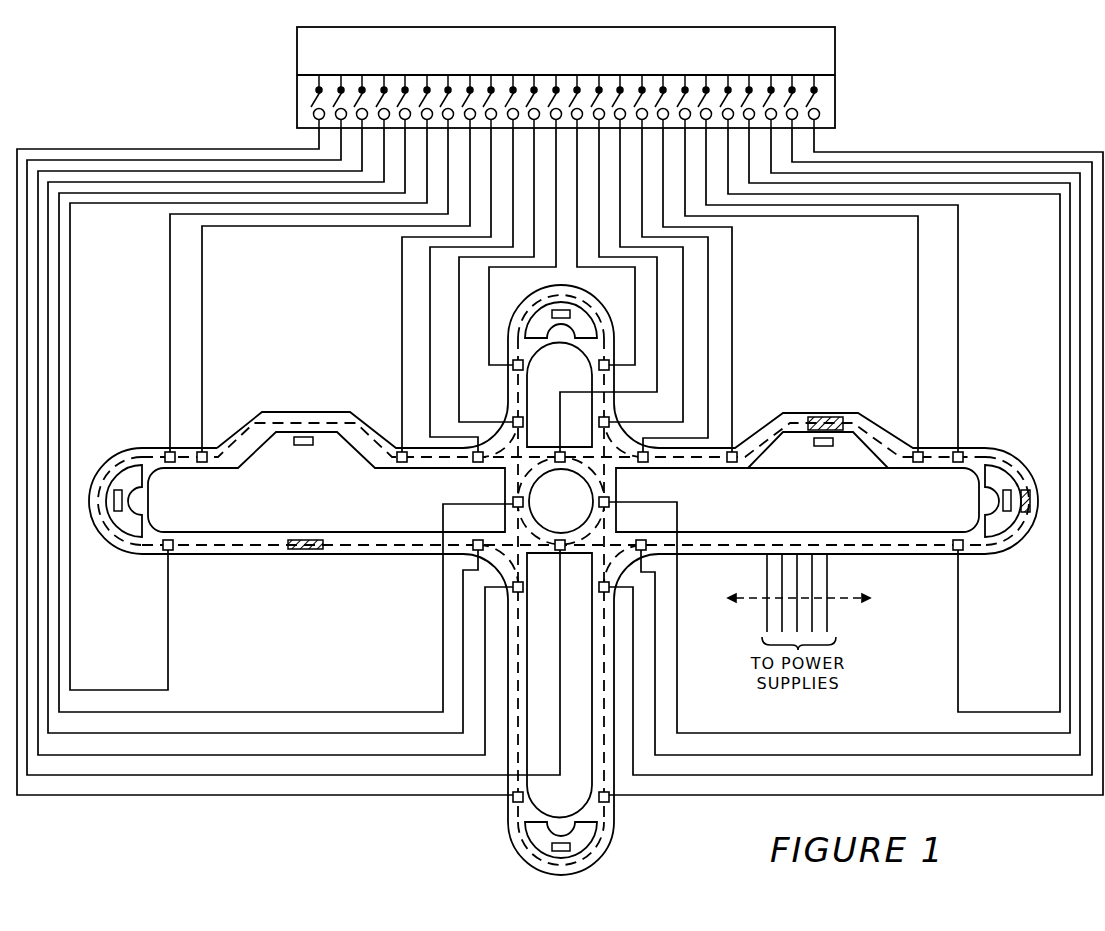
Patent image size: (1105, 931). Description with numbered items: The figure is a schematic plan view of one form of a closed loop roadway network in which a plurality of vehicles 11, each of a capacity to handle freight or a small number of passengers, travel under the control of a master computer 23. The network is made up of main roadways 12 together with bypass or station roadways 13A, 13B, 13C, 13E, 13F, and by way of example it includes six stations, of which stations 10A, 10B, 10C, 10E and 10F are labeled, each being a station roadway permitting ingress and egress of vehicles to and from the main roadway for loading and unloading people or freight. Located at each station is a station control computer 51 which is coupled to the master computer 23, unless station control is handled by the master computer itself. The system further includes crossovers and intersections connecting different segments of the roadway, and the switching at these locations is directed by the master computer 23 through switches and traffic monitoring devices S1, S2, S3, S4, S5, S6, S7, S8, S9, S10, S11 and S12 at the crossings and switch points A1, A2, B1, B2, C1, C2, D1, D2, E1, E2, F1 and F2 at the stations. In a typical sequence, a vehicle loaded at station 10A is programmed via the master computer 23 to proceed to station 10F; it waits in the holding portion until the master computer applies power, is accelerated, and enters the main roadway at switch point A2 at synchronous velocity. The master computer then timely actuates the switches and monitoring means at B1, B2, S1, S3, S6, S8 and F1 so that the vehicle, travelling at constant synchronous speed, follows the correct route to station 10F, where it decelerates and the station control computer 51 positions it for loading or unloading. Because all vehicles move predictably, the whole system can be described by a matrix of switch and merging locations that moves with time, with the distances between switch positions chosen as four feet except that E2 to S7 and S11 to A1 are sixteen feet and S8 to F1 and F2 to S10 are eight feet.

The master computer 23 is at (836, 47).
The station 10A is at (1032, 460).
The station 10B is at (775, 412).
The station 10C is at (522, 296).
The station 10E is at (106, 455).
The station 10F is at (500, 853).
The bypass or station roadway 13A is at (1025, 552).
The bypass or station roadway 13B is at (870, 414).
The bypass or station roadway 13C is at (612, 298).
The bypass or station roadway 13E is at (98, 543).
The bypass or station roadway 13F is at (614, 850).
The vehicle 11 is at (300, 550).
The main roadway 12 is at (600, 380).
The station control computer 51 is at (124, 500).
The switch point A1 is at (958, 552).
The switch point A2 is at (962, 452).
The switch point B1 is at (918, 462).
The switch point B2 is at (734, 462).
The switch point C1 is at (610, 368).
The switch point C2 is at (512, 368).
The switch point D1 is at (402, 452).
The switch point D2 is at (206, 452).
The switch point E1 is at (168, 452).
The switch point E2 is at (173, 550).
The switch point F1 is at (513, 797).
The switch point F2 is at (609, 797).
The switch S1 is at (648, 460).
The switch S2 is at (609, 422).
The switch S3 is at (565, 452).
The switch S4 is at (513, 422).
The switch S5 is at (478, 462).
The switch S6 is at (523, 504).
The switch S7 is at (478, 540).
The switch S8 is at (523, 587).
The switch S9 is at (562, 540).
The switch S10 is at (599, 587).
The switch S11 is at (641, 540).
The switch S12 is at (609, 504).